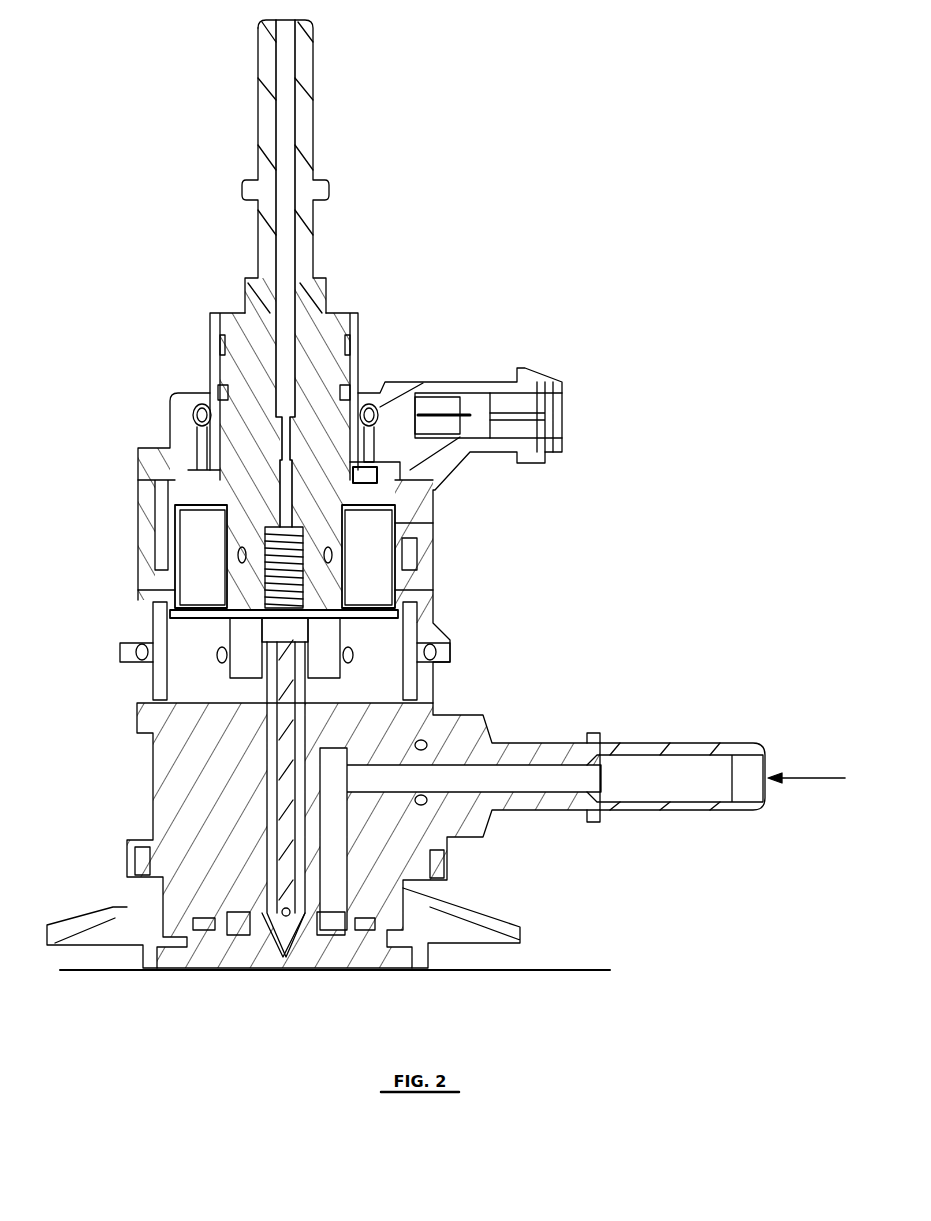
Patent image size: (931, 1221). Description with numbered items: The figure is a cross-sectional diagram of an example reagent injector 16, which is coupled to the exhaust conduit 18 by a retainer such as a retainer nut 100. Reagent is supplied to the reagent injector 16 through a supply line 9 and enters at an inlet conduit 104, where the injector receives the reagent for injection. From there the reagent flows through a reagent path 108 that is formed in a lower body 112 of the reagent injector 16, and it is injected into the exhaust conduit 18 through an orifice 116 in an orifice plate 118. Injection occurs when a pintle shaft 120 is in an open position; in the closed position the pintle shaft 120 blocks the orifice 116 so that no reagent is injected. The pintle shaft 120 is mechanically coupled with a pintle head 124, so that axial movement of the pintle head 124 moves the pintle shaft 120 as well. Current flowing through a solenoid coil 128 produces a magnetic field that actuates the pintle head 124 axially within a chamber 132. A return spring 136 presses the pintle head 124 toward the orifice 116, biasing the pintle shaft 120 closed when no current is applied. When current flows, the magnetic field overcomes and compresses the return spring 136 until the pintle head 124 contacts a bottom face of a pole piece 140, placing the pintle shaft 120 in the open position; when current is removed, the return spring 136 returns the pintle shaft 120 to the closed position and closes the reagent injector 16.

The reagent injector 16 is at (727, 78).
The pole piece 140 is at (236, 305).
The return spring 136 is at (257, 530).
The solenoid coil 128 is at (198, 557).
The pintle head 124 is at (255, 625).
The chamber 132 is at (333, 648).
The pintle shaft 120 is at (280, 733).
The lower body 112 is at (167, 785).
The reagent path 108 is at (493, 777).
The inlet conduit 104 is at (753, 767).
The supply line 9 is at (808, 776).
The retainer nut 100 is at (507, 933).
The exhaust conduit 18 is at (590, 970).
The orifice plate 118 is at (332, 960).
The orifice 116 is at (284, 988).